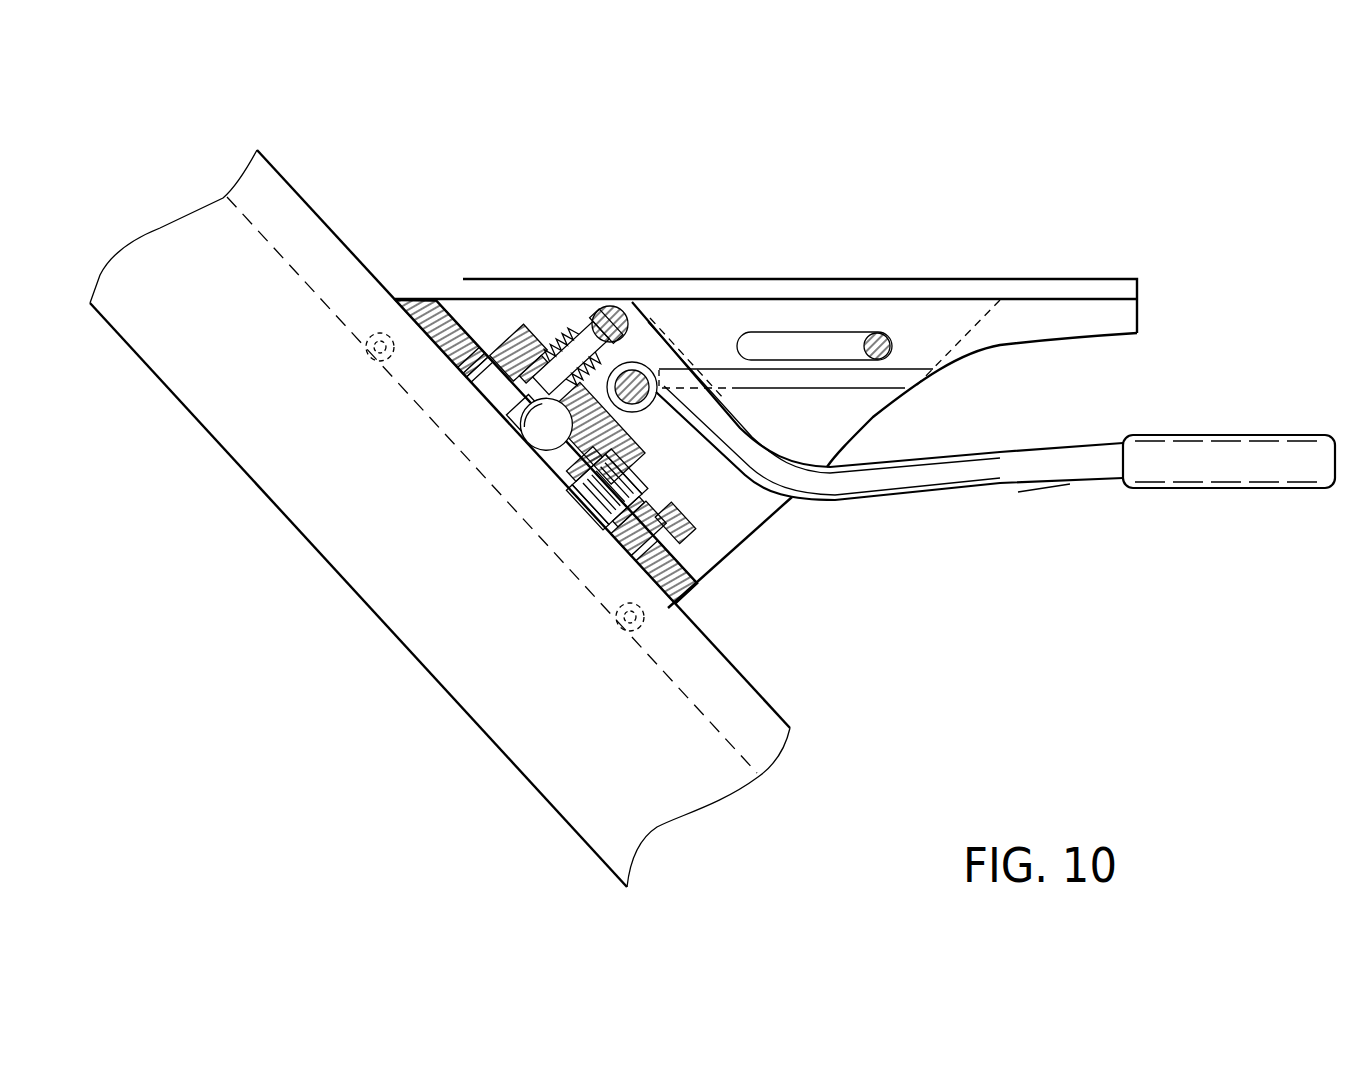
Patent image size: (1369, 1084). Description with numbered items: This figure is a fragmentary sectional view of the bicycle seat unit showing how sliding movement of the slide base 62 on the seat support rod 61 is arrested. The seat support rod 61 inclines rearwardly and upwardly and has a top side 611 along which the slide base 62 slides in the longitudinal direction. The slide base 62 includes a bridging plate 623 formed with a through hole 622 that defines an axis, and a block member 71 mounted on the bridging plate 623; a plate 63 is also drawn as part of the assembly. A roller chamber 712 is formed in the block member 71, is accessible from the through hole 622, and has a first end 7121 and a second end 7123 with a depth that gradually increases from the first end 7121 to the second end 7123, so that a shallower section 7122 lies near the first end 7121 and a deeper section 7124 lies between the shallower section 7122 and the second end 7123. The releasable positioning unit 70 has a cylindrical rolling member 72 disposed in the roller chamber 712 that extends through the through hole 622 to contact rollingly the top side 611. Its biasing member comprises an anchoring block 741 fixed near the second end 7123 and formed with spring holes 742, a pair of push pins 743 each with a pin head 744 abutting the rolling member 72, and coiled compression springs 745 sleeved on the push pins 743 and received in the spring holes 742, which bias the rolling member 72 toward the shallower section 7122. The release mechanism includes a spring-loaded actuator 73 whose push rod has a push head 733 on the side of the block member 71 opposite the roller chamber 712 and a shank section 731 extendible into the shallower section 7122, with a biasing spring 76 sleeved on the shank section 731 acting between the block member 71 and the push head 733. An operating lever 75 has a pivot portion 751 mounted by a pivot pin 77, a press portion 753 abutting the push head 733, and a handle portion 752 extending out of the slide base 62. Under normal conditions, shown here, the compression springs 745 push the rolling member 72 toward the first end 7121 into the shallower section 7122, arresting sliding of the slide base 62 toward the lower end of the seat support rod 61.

The seat support rod 61 is at (288, 180).
The top side 611 is at (580, 490).
The slide base 62 is at (743, 540).
The through hole 622 is at (505, 390).
The bridging plate 623 is at (421, 300).
The plate 63 is at (913, 278).
The releasable positioning unit 70 is at (1017, 488).
The block member 71 is at (531, 325).
The roller chamber 712 is at (598, 424).
The first end 7121 is at (470, 370).
The shallower section 7122 is at (535, 402).
The second end 7123 is at (672, 525).
The deeper section 7124 is at (598, 470).
The rolling member 72 is at (540, 450).
The spring-loaded actuator 73 is at (557, 330).
The shank section 731 is at (541, 335).
The push head 733 is at (578, 335).
The anchoring block 741 is at (634, 560).
The spring holes 742 is at (617, 480).
The push pins 743 is at (597, 490).
The pin head 744 is at (557, 468).
The coiled compression springs 745 is at (570, 482).
The operating lever 75 is at (1070, 482).
The pivot portion 751 is at (655, 370).
The handle portion 752 is at (1223, 472).
The press portion 753 is at (608, 306).
The biasing spring 76 is at (557, 345).
The pivot pin 77 is at (633, 370).